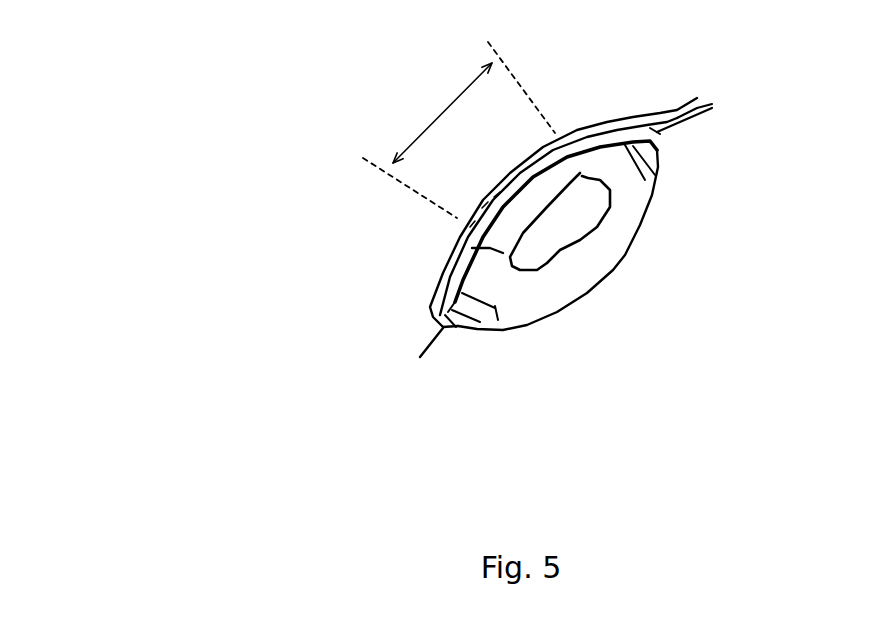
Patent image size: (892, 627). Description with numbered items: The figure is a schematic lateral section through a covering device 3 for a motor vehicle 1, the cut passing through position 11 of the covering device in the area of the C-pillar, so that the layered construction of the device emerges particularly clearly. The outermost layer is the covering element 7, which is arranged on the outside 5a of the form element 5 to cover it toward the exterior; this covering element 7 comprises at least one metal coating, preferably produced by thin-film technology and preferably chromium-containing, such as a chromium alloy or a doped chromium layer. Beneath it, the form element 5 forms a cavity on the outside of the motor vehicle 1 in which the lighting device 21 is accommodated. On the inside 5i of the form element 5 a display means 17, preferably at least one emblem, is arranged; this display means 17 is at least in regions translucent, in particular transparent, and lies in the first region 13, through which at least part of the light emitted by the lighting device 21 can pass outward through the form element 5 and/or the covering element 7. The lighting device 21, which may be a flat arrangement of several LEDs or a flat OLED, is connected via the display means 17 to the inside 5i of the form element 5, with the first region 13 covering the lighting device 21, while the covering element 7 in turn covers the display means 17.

The covering device 3 is at (264, 149).
The motor vehicle 1 is at (433, 390).
The position 11 is at (427, 363).
The form element 5 is at (622, 140).
The outside of the form element 5a is at (447, 268).
The inside of the form element 5i is at (605, 160).
The covering element 7 is at (567, 130).
The first translucent region 13 is at (459, 130).
The display means 17 is at (500, 232).
The lighting device 21 is at (543, 240).